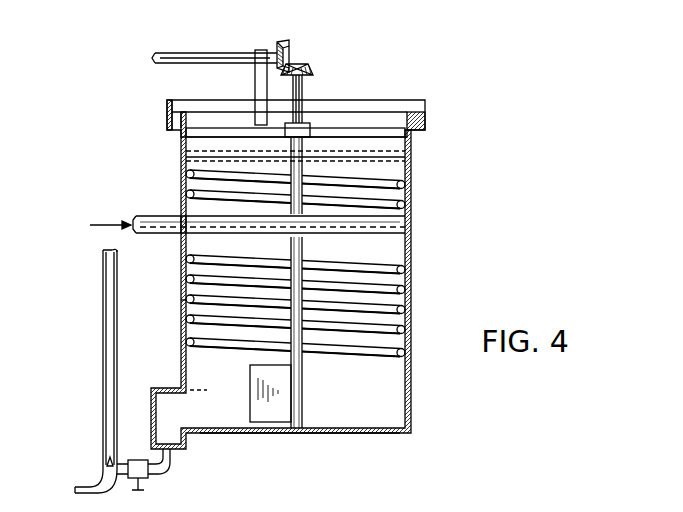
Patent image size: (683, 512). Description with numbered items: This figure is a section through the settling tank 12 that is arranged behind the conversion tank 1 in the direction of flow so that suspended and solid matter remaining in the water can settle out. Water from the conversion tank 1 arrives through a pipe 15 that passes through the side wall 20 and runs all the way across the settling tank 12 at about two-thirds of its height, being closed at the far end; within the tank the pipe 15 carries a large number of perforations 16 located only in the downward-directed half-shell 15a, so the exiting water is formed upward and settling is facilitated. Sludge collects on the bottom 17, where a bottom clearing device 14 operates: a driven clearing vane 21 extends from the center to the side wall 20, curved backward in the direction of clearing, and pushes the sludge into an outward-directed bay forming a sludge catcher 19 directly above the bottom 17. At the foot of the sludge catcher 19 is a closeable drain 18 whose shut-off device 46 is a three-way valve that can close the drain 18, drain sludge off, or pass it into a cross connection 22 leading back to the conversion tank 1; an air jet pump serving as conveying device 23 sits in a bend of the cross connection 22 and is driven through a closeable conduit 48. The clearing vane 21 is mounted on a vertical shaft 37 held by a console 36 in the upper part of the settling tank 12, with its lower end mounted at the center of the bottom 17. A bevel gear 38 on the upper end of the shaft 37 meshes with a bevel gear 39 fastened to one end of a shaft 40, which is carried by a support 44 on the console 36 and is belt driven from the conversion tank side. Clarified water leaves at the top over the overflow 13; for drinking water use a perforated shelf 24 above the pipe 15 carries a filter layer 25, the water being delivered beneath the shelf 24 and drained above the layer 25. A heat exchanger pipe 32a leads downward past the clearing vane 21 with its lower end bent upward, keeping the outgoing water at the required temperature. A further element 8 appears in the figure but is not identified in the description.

The conversion tank 1 is at (581, 0).
The housing 8 is at (408, 11).
The settling tank 12 is at (468, 138).
The overflow 13 is at (415, 110).
The bottom clearing device 14 is at (290, 400).
The pipe 15 is at (203, 214).
The half-shell 15a is at (394, 235).
The perforations 16 is at (184, 236).
The bottom 17 is at (232, 433).
The closeable drain 18 is at (172, 468).
The sludge catcher 19 is at (163, 415).
The side wall 20 is at (183, 323).
The clearing vane 21 is at (275, 405).
The cross connection 22 is at (108, 281).
The conveying device 23 is at (106, 466).
The perforated shelf 24 is at (393, 163).
The filter layer 25 is at (414, 153).
The pipe 32a is at (410, 199).
The console 36 is at (384, 130).
The shaft 37 is at (305, 86).
The bevel gear 38 is at (313, 69).
The bevel gear 39 is at (286, 41).
The shaft 40 is at (186, 54).
The support 44 is at (259, 76).
The shut-off device 46 is at (150, 470).
The closeable conduit 48 is at (78, 489).